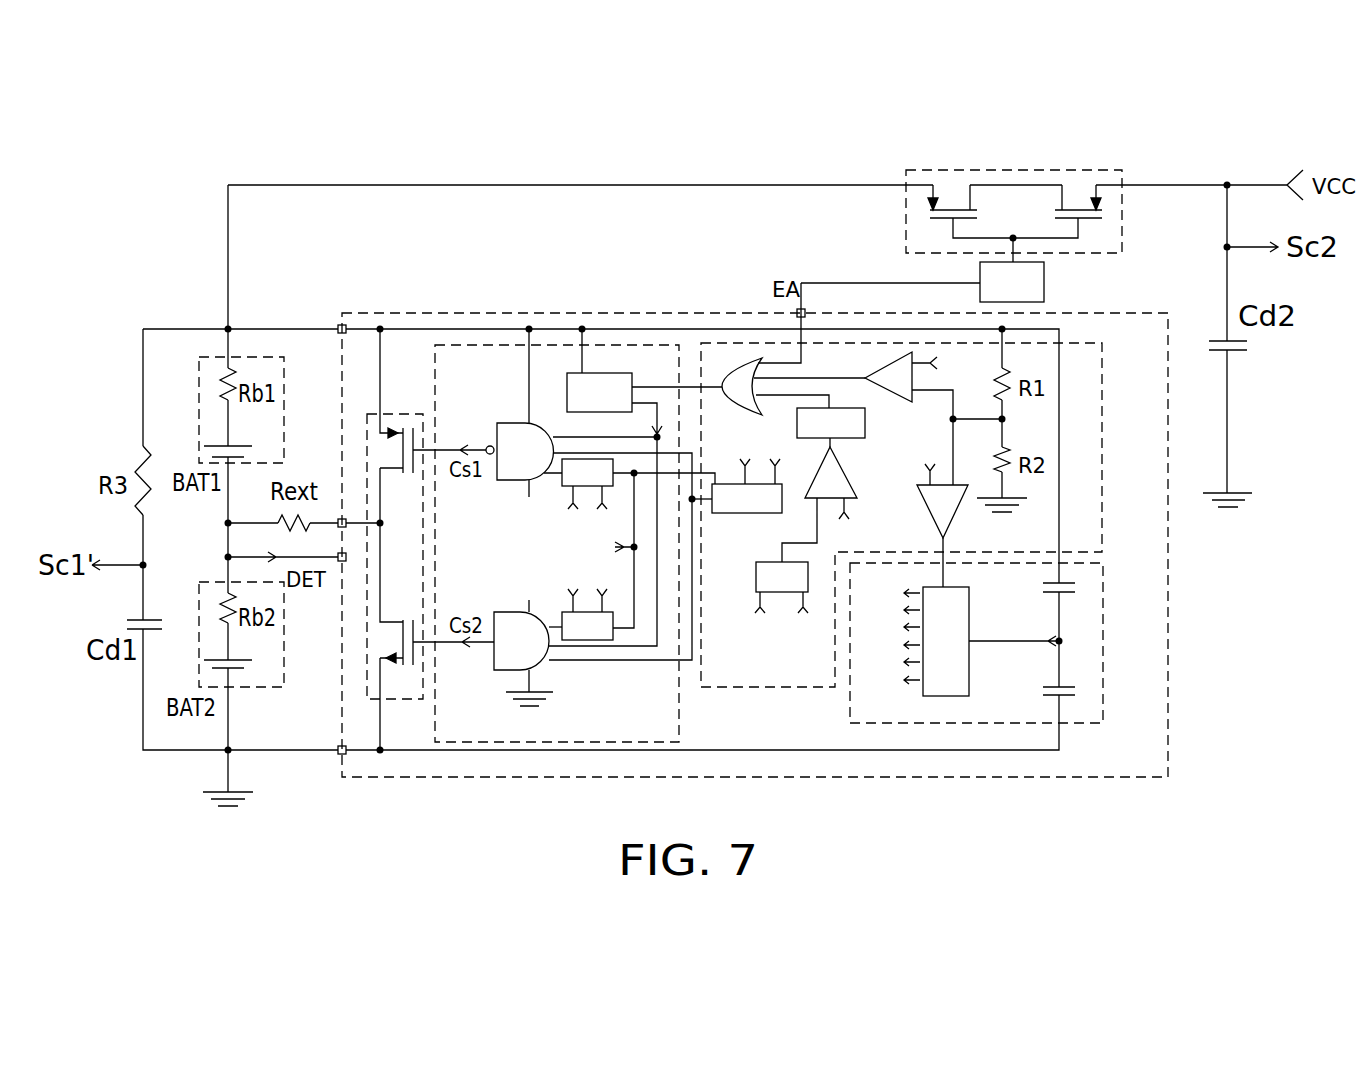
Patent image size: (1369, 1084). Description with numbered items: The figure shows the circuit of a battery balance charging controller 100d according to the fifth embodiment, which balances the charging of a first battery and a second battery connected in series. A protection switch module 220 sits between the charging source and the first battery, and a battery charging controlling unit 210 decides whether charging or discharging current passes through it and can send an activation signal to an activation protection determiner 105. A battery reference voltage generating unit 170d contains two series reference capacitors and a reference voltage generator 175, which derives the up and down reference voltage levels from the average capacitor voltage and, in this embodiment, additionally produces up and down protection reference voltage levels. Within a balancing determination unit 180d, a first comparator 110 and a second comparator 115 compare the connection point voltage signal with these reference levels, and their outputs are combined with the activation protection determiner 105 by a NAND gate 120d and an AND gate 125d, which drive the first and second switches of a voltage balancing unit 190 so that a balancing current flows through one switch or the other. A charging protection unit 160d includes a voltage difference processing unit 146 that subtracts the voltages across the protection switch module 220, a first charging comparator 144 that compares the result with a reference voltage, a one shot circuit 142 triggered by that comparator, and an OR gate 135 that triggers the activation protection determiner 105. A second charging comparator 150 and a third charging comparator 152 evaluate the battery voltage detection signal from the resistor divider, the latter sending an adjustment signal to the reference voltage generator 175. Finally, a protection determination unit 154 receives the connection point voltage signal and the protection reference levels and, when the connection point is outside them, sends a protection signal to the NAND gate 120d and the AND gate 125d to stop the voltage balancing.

The battery balance charging controller 100d is at (567, 320).
The balancing determination unit 180d is at (435, 383).
The voltage balancing unit 190 is at (380, 700).
The NAND gate 120d is at (516, 437).
The AND gate 125d is at (514, 650).
The activation protection determiner 105 is at (644, 381).
The first comparator 110 is at (638, 543).
The second comparator 115 is at (586, 603).
The OR gate 135 is at (733, 400).
The one shot circuit 142 is at (831, 427).
The first charging comparator 144 is at (863, 470).
The voltage difference processing unit 146 is at (783, 604).
The protection determination unit 154 is at (758, 474).
The second charging comparator 150 is at (890, 380).
The third charging comparator 152 is at (921, 514).
The charging protection unit 160d is at (1085, 381).
The battery reference voltage generating unit 170d is at (1095, 632).
The reference voltage generator 175 is at (962, 639).
The protection switch module 220 is at (1115, 173).
The battery charging controlling unit 210 is at (922, 282).